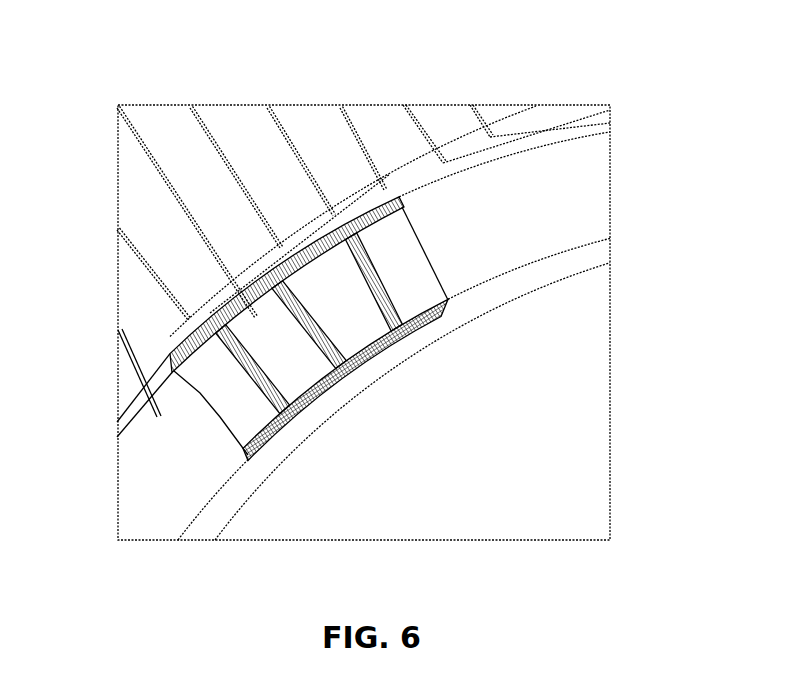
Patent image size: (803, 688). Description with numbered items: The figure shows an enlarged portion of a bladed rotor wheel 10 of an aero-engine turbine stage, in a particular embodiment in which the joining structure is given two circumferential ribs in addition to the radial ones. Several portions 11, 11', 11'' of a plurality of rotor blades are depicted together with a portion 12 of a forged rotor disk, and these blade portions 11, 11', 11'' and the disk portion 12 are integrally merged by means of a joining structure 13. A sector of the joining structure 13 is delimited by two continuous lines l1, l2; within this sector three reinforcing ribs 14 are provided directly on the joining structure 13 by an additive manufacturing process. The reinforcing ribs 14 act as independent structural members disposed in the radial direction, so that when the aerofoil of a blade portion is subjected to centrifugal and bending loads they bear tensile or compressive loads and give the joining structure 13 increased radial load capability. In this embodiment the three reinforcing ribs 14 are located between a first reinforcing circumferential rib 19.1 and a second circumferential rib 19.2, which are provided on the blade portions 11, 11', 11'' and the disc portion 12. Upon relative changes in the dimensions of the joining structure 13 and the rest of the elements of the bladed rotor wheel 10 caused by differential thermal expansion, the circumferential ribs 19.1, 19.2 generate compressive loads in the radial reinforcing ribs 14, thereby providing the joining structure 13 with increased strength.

The bladed rotor wheel 10 is at (144, 80).
The rotor blade portion 11 is at (390, 189).
The rotor blade portion 11' is at (236, 145).
The rotor blade portion 11'' is at (187, 181).
The forged rotor disk portion 12 is at (475, 420).
The joining structure 13 is at (158, 418).
The reinforcing ribs 14 is at (265, 378).
The first reinforcing circumferential rib 19.1 is at (373, 178).
The second circumferential rib 19.2 is at (280, 430).
The continuous line l1 is at (222, 427).
The continuous line l2 is at (447, 289).